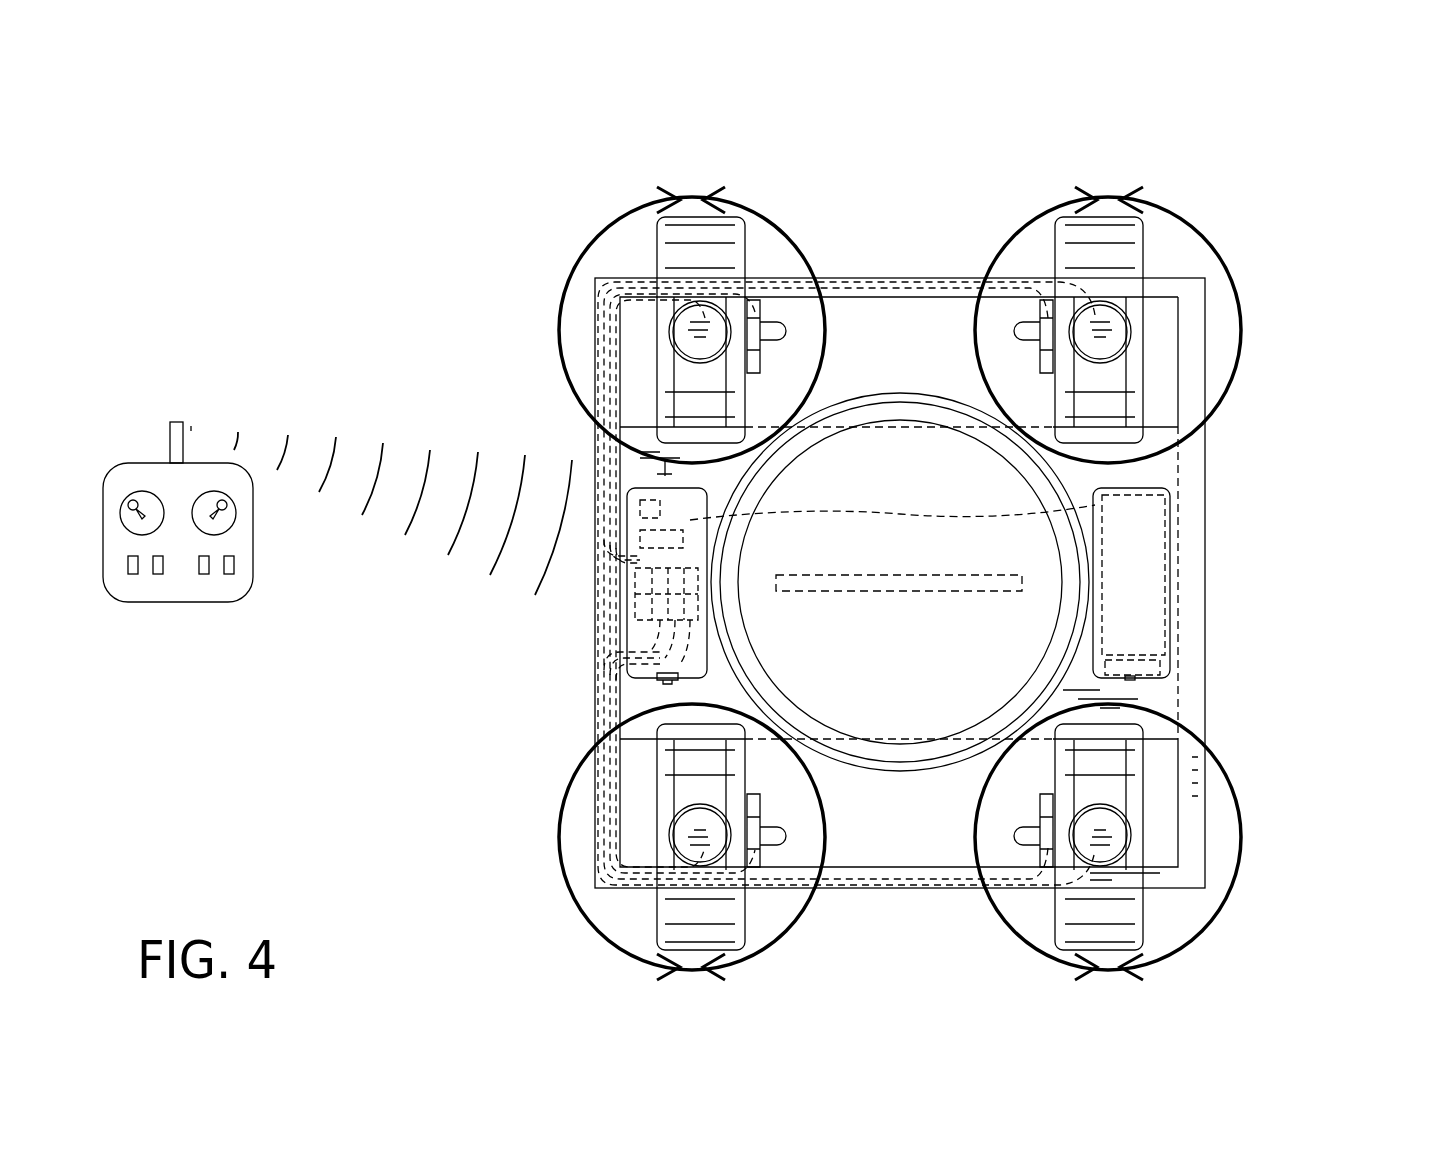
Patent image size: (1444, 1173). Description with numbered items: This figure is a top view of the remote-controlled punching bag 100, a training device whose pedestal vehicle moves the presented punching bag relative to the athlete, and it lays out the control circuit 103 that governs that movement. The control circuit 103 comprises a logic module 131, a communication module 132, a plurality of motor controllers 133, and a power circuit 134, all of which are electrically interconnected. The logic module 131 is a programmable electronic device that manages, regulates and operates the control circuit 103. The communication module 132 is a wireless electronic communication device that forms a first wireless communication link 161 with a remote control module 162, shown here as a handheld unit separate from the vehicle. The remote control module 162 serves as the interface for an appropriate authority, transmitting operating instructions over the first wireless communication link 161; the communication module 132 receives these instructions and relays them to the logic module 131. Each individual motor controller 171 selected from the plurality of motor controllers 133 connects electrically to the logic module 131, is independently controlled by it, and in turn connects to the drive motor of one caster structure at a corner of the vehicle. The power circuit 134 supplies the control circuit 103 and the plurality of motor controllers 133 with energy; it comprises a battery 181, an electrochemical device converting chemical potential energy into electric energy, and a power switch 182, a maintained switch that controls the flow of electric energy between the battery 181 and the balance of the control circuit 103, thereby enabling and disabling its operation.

The remote-controlled punching bag 100 is at (1310, 184).
The control circuit 103 is at (233, 232).
The logic module 131 is at (673, 540).
The communication module 132 is at (643, 512).
The plurality of motor controllers 133 is at (433, 718).
The power circuit 134 is at (1392, 895).
The first wireless communication link 161 is at (420, 490).
The remote control module 162 is at (177, 604).
The individual motor controller 171 is at (643, 603).
The battery 181 is at (1137, 572).
The power switch 182 is at (668, 681).